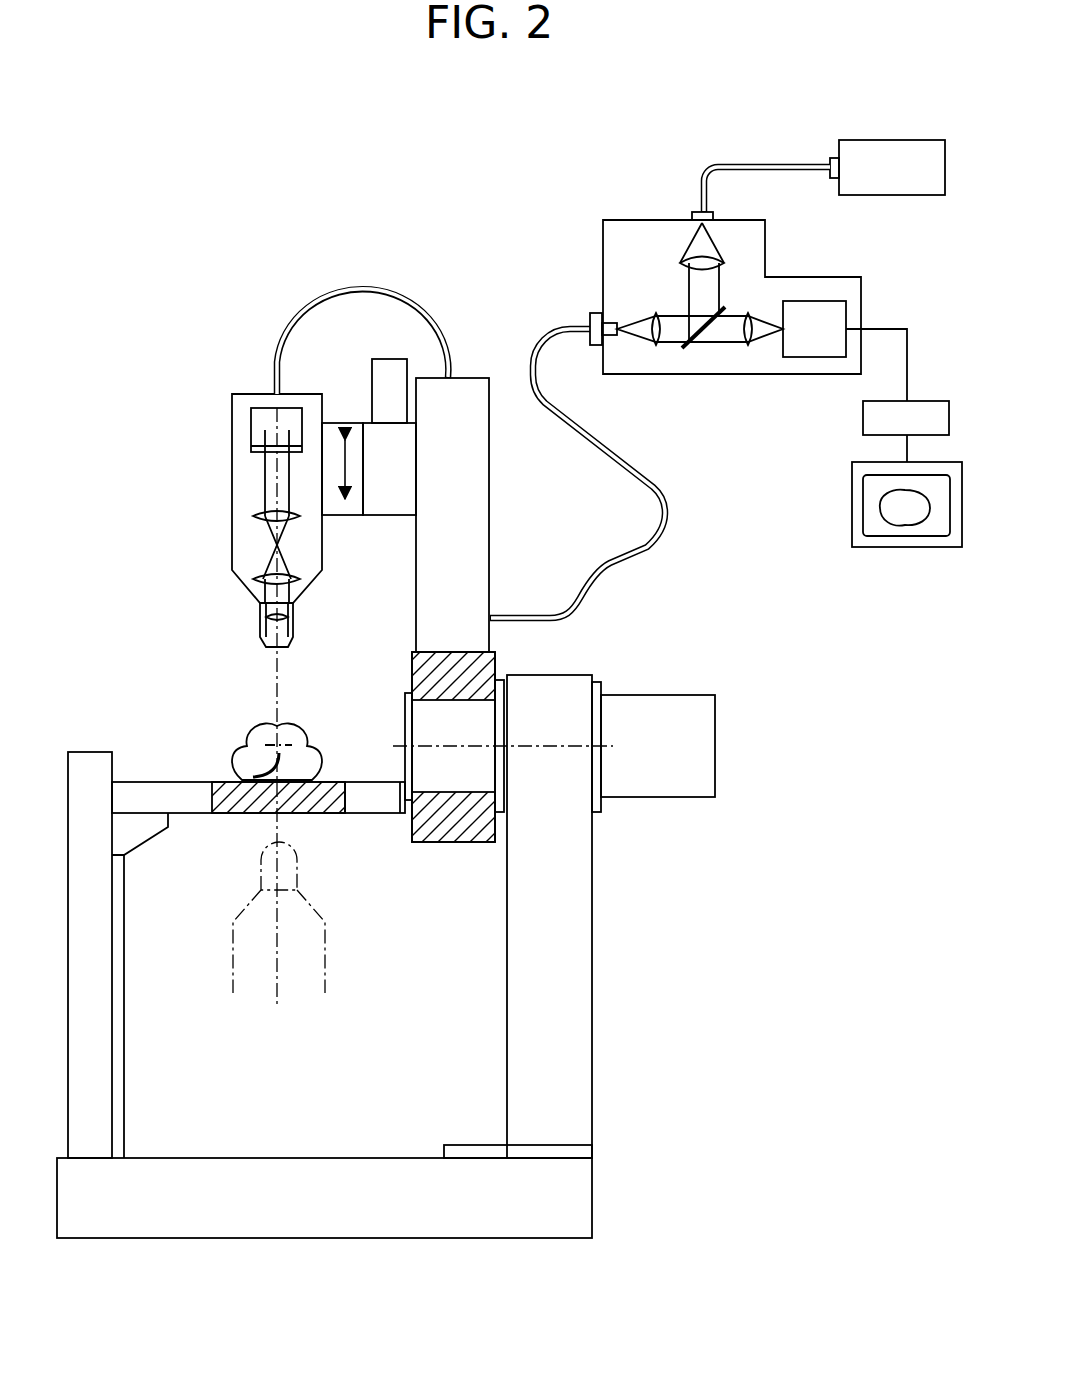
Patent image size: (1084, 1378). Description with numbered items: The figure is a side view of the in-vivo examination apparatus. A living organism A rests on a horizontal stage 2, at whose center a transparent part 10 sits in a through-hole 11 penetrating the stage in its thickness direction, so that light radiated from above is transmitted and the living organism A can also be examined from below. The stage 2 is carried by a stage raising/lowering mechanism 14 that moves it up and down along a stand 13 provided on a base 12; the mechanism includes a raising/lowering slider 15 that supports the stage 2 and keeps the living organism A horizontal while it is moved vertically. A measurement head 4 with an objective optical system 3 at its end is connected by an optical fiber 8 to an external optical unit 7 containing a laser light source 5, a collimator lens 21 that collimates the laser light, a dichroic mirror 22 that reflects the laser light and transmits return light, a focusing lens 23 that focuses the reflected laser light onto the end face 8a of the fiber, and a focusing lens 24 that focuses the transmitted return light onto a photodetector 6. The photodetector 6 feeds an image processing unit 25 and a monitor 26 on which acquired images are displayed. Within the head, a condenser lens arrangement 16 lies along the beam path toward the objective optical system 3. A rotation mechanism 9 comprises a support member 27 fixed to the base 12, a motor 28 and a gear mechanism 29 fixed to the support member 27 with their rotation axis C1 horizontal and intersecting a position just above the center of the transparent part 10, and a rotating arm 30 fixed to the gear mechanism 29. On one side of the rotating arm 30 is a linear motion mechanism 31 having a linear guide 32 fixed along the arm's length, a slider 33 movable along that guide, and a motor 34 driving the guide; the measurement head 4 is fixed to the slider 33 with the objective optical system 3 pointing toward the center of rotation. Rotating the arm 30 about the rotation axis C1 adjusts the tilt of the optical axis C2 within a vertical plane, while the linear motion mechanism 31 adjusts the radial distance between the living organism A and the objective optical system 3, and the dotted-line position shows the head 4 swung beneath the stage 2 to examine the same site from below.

The stage 2 is at (155, 790).
The objective optical system 3 is at (260, 620).
The measurement head 4 is at (218, 445).
The laser light source 5 is at (903, 180).
The photodetector 6 is at (823, 301).
The optical unit 7 is at (672, 184).
The optical fiber 8 is at (352, 298).
The end face 8a is at (615, 322).
The rotation mechanism 9 is at (594, 638).
The transparent part 10 is at (232, 813).
The through-hole 11 is at (330, 813).
The base 12 is at (350, 1238).
The stand 13 is at (97, 1073).
The stage raising/lowering mechanism 14 is at (150, 932).
The raising/lowering slider 15 is at (133, 838).
The condenser lens 16 is at (232, 530).
The collimator lens 21 is at (687, 258).
The dichroic mirror 22 is at (687, 349).
The focusing lens 23 is at (657, 347).
The focusing lens 24 is at (753, 348).
The image processing unit 25 is at (922, 397).
The monitor 26 is at (930, 548).
The support member 27 is at (592, 1012).
The motor 28 is at (728, 692).
The gear mechanism 29 is at (608, 682).
The rotating arm 30 is at (490, 483).
The linear motion mechanism 31 is at (356, 528).
The linear guide 32 is at (387, 516).
The slider 33 is at (337, 421).
The motor 34 is at (390, 357).
The living organism A is at (255, 748).
The rotation axis C1 is at (438, 745).
The optical axis C2 is at (277, 680).